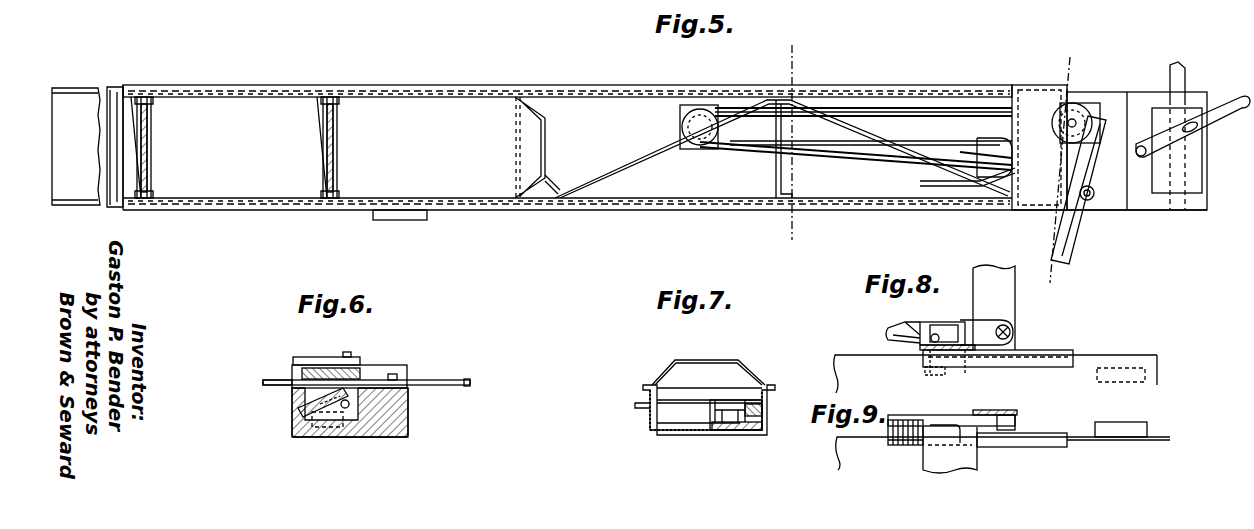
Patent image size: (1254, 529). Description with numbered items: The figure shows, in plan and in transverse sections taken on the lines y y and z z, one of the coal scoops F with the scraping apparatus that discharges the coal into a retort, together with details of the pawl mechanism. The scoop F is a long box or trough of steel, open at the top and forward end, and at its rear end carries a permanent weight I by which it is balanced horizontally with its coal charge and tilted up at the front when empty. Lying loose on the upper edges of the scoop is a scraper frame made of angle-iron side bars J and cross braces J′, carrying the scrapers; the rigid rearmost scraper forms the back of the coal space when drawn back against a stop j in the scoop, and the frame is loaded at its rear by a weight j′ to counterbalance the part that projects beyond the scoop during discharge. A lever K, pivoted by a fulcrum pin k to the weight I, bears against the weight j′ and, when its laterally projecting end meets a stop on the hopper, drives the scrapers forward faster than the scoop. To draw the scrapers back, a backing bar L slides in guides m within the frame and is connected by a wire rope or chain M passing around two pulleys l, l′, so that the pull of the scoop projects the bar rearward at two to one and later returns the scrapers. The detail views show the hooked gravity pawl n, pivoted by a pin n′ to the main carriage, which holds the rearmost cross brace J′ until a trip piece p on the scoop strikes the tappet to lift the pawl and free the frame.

In FIG. 5, the scoop F is at (327, 146).
In FIG. 6, the scoop F is at (408, 405).
In FIG. 7, the scoop F is at (709, 422).
In FIG. 8, the scoop F is at (995, 372).
In FIG. 9, the scoop F is at (1003, 453).
In FIG. 5, the angle-iron side bar J is at (657, 147).
In FIG. 7, the angle-iron side bar J is at (652, 386).
In FIG. 8, the angle-iron side bar J is at (1060, 350).
In FIG. 9, the angle-iron side bar J is at (1022, 433).
In FIG. 5, the cross brace J′ is at (1045, 208).
In FIG. 7, the cross brace J′ is at (709, 391).
In FIG. 8, the cross brace J′ is at (968, 367).
In FIG. 9, the cross brace J′ is at (948, 445).
In FIG. 5, the stop j is at (553, 185).
In FIG. 5, the weight j′ is at (1038, 147).
In FIG. 6, the weight j′ is at (370, 366).
In FIG. 9, the weight j′ is at (936, 454).
In FIG. 5, the trip piece p is at (405, 220).
In FIG. 7, the trip piece p is at (632, 402).
In FIG. 8, the trip piece p is at (1097, 372).
In FIG. 9, the trip piece p is at (1121, 420).
In FIG. 5, the pulley l is at (699, 127).
In FIG. 5, the pulley l′ is at (1080, 106).
In FIG. 6, the pulley l′ is at (320, 412).
In FIG. 5, the backing bar L is at (863, 124).
In FIG. 6, the backing bar L is at (330, 427).
In FIG. 7, the backing bar L is at (725, 430).
In FIG. 5, the wire rope or chain M is at (860, 160).
In FIG. 6, the wire rope or chain M is at (312, 402).
In FIG. 5, the guides m is at (956, 156).
In FIG. 7, the guides m is at (754, 430).
In FIG. 5, the lever K is at (1078, 190).
In FIG. 6, the lever K is at (366, 374).
In FIG. 5, the fulcrum pin k is at (1094, 193).
In FIG. 6, the fulcrum pin k is at (399, 377).
In FIG. 5, the permanent weight I is at (1137, 151).
In FIG. 5, the section line z z is at (789, 144).
In FIG. 5, the section line y y is at (1057, 171).
In FIG. 8, the hooked gravity pawl n is at (903, 326).
In FIG. 9, the hooked gravity pawl n is at (905, 423).
In FIG. 8, the pin n′ is at (1011, 332).
In FIG. 9, the pin n′ is at (1016, 422).